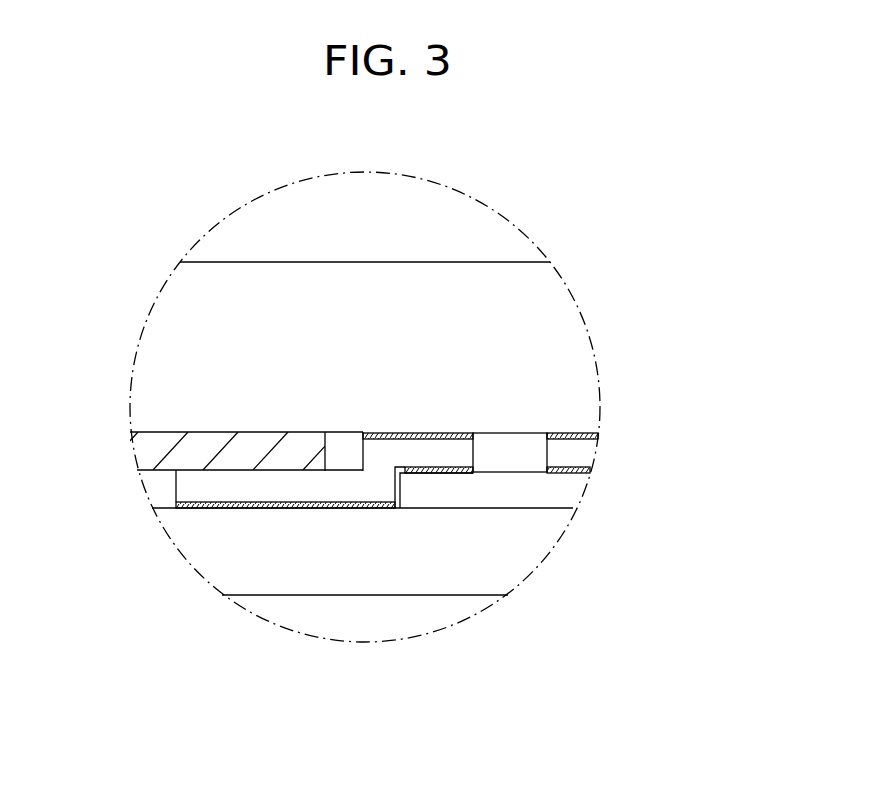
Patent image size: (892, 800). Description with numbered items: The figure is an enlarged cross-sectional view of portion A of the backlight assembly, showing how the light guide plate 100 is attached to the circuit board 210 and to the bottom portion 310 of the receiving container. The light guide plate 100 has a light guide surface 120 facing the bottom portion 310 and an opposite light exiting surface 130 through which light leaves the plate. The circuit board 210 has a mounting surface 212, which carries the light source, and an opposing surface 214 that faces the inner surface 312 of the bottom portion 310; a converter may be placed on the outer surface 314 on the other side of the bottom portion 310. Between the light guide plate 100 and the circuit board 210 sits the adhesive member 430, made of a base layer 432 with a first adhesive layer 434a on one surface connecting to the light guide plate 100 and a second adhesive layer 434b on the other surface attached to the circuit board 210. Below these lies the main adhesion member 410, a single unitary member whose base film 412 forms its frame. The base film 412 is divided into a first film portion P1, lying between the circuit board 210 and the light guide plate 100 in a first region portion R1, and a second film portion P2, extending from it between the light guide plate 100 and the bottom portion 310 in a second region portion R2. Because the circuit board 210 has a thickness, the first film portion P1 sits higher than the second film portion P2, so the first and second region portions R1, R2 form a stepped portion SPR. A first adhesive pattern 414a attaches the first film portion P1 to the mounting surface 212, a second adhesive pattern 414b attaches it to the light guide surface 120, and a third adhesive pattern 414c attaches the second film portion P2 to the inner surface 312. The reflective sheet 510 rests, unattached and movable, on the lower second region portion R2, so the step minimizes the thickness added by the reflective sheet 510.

The light guide plate 100 is at (565, 375).
The light guide surface 120 is at (172, 424).
The light exiting surface 130 is at (220, 256).
The circuit board 210 is at (557, 516).
The mounting surface 212 is at (512, 473).
The opposing surface 214 is at (565, 502).
The bottom portion 310 is at (457, 565).
The inner surface 312 is at (483, 512).
The outer surface 314 is at (488, 589).
The main adhesion member 410 is at (362, 591).
The base film 412 is at (362, 590).
The first adhesive pattern 414a is at (445, 472).
The second adhesive pattern 414b is at (362, 436).
The third adhesive pattern 414c is at (202, 508).
The adhesive member 430 is at (547, 455).
The base layer 432 is at (587, 452).
The first adhesive layer 434a is at (585, 434).
The second adhesive layer 434b is at (585, 477).
The reflective sheet 510 is at (147, 448).
The portion A is at (572, 265).
The first film portion P1 is at (425, 571).
The second film portion P2 is at (300, 490).
The first region portion R1 is at (474, 145).
The second region portion R2 is at (327, 145).
The stepped portion SPR is at (401, 145).